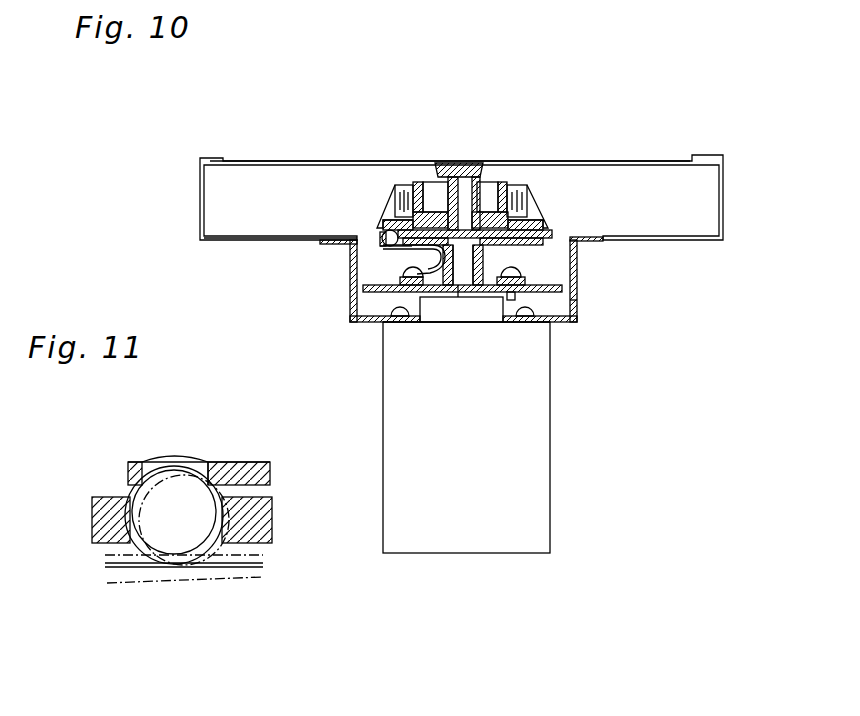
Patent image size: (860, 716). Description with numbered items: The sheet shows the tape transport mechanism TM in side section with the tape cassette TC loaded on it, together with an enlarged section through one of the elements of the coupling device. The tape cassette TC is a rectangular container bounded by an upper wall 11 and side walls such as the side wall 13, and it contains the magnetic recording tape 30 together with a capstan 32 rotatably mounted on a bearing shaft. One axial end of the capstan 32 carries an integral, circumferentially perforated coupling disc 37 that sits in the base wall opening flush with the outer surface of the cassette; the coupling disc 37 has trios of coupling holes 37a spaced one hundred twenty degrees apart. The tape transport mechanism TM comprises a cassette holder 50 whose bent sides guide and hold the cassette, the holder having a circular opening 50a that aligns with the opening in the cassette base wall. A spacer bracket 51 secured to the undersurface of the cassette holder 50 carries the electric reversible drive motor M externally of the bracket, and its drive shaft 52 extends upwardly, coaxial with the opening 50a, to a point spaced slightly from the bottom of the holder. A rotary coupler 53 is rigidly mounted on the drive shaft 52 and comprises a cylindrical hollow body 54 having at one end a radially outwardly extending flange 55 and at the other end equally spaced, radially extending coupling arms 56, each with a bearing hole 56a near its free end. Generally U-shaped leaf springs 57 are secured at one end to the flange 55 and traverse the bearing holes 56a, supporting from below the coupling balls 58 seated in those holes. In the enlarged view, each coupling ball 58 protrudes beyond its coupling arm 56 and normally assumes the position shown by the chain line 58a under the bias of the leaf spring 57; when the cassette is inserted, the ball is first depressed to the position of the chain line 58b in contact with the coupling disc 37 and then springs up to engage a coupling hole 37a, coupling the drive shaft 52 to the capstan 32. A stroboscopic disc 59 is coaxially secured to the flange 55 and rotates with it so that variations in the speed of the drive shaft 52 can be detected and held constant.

In FIG. 10, the upper wall 11 is at (447, 163).
In FIG. 10, the side wall 13 is at (726, 158).
In FIG. 10, the tape cassette TC is at (648, 156).
In FIG. 10, the tape transport mechanism TM is at (577, 325).
In FIG. 10, the electric reversible drive motor M is at (531, 435).
In FIG. 10, the magnetic recording tape 30 is at (519, 185).
In FIG. 10, the capstan 32 is at (487, 182).
In FIG. 10, the coupling disc 37 is at (384, 232).
In FIG. 11, the coupling disc 37 is at (242, 462).
In FIG. 10, the coupling holes 37a is at (545, 210).
In FIG. 11, the coupling holes 37a is at (205, 480).
In FIG. 10, the cassette holder 50 is at (245, 247).
In FIG. 10, the circular opening 50a is at (347, 262).
In FIG. 10, the spacer bracket 51 is at (578, 302).
In FIG. 10, the drive shaft 52 is at (430, 323).
In FIG. 10, the rotary coupler 53 is at (578, 286).
In FIG. 10, the cylindrical hollow body 54 is at (463, 300).
In FIG. 10, the radially outwardly extending flange 55 is at (512, 300).
In FIG. 10, the coupling arms 56 is at (375, 233).
In FIG. 11, the coupling arms 56 is at (95, 540).
In FIG. 10, the bearing hole 56a is at (555, 226).
In FIG. 11, the bearing hole 56a is at (230, 522).
In FIG. 10, the leaf springs 57 is at (446, 282).
In FIG. 11, the leaf springs 57 is at (215, 575).
In FIG. 10, the coupling balls 58 is at (386, 230).
In FIG. 11, the coupling balls 58 is at (130, 498).
In FIG. 11, the chain line 58a is at (142, 462).
In FIG. 11, the chain line 58b is at (178, 490).
In FIG. 10, the stroboscopic disc 59 is at (560, 337).